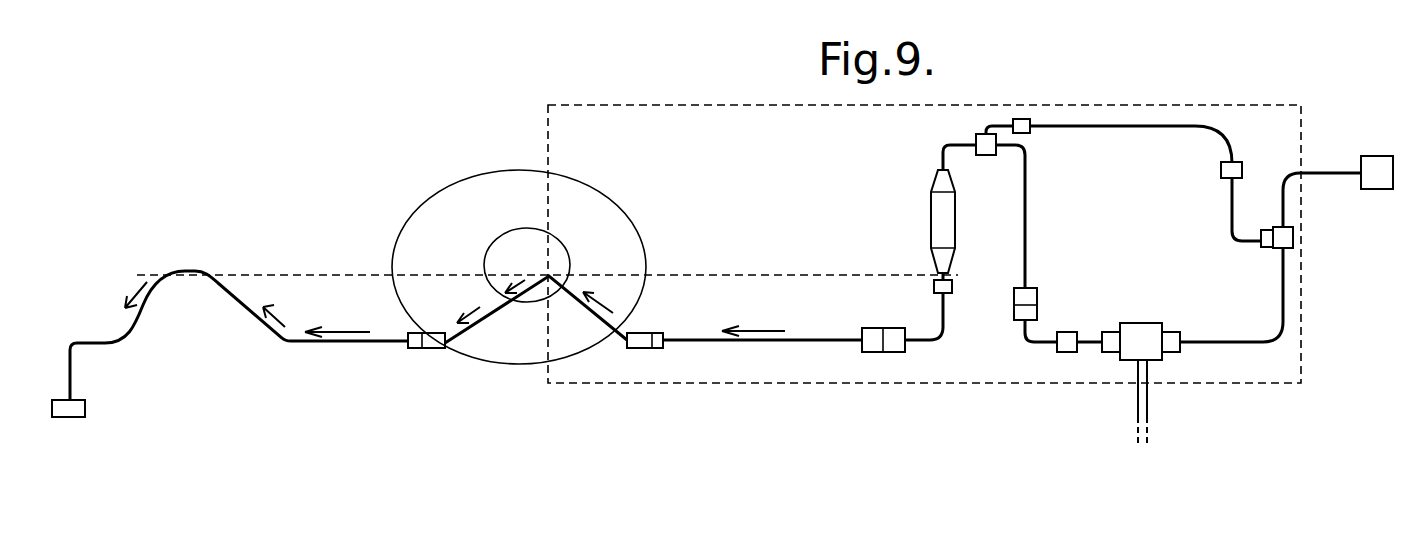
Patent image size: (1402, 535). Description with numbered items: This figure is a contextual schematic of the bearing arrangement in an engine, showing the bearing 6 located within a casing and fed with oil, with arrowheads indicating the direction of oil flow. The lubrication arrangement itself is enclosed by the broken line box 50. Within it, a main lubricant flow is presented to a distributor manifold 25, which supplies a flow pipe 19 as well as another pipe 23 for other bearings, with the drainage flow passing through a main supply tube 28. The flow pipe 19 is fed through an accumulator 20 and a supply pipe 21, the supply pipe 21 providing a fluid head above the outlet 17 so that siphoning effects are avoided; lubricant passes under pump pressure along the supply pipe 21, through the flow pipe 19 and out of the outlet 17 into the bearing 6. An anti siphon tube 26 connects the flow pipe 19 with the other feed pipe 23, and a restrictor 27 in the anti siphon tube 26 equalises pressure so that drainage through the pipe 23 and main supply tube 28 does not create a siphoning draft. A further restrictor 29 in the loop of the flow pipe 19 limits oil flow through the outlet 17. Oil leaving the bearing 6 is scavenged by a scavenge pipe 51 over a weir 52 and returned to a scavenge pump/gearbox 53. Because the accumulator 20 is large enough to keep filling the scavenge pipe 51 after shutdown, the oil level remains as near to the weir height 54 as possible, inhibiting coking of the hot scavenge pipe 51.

The bearing 6 is at (536, 228).
The outlet 17 is at (549, 276).
The flow pipe 19 is at (715, 342).
The accumulator 20 is at (930, 213).
The supply pipe 21 is at (1032, 337).
The pipe 23 is at (1233, 340).
The distributor manifold 25 is at (1143, 330).
The anti siphon tube 26 is at (1172, 128).
The restrictor 27 is at (1223, 181).
The main supply tube 28 is at (1149, 402).
The restrictor 29 is at (875, 353).
The broken line box 50 is at (1118, 103).
The scavenge pipe 51 is at (470, 334).
The weir 52 is at (190, 271).
The scavenge pump/gearbox 53 is at (67, 419).
The weir height 54 is at (282, 272).